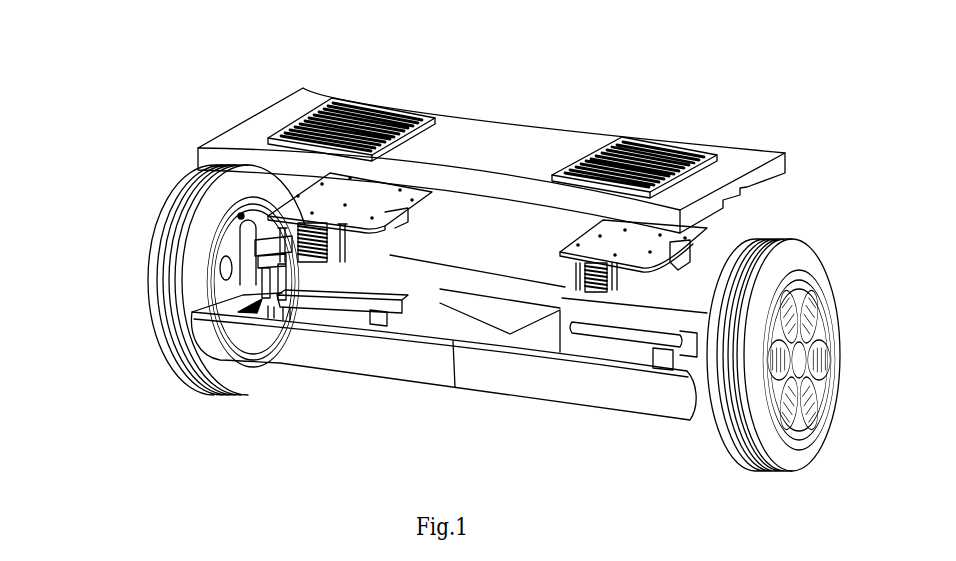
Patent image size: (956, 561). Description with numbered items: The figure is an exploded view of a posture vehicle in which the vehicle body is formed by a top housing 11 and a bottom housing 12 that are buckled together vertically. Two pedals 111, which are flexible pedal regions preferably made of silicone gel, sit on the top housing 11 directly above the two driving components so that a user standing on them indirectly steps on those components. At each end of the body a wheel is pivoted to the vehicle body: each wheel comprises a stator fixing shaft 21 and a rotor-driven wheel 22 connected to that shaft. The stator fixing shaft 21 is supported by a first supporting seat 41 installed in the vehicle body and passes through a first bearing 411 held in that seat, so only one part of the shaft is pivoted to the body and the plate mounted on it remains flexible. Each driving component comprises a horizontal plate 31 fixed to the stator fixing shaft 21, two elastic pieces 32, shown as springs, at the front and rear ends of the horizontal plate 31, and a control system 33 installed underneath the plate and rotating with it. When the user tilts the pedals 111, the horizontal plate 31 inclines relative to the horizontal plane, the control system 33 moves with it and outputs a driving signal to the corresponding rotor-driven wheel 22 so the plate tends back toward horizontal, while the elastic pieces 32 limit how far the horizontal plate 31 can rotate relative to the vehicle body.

The top housing 11 is at (490, 148).
The pedals 111 is at (362, 104).
The bottom housing 12 is at (420, 365).
The stator fixing shaft 21 is at (327, 295).
The rotor-driven wheel 22 is at (472, 318).
The horizontal plate 31 is at (340, 203).
The elastic piece 32 is at (298, 243).
The control system 33 is at (562, 304).
The first supporting seat 41 is at (155, 295).
The first bearing 411 is at (158, 256).